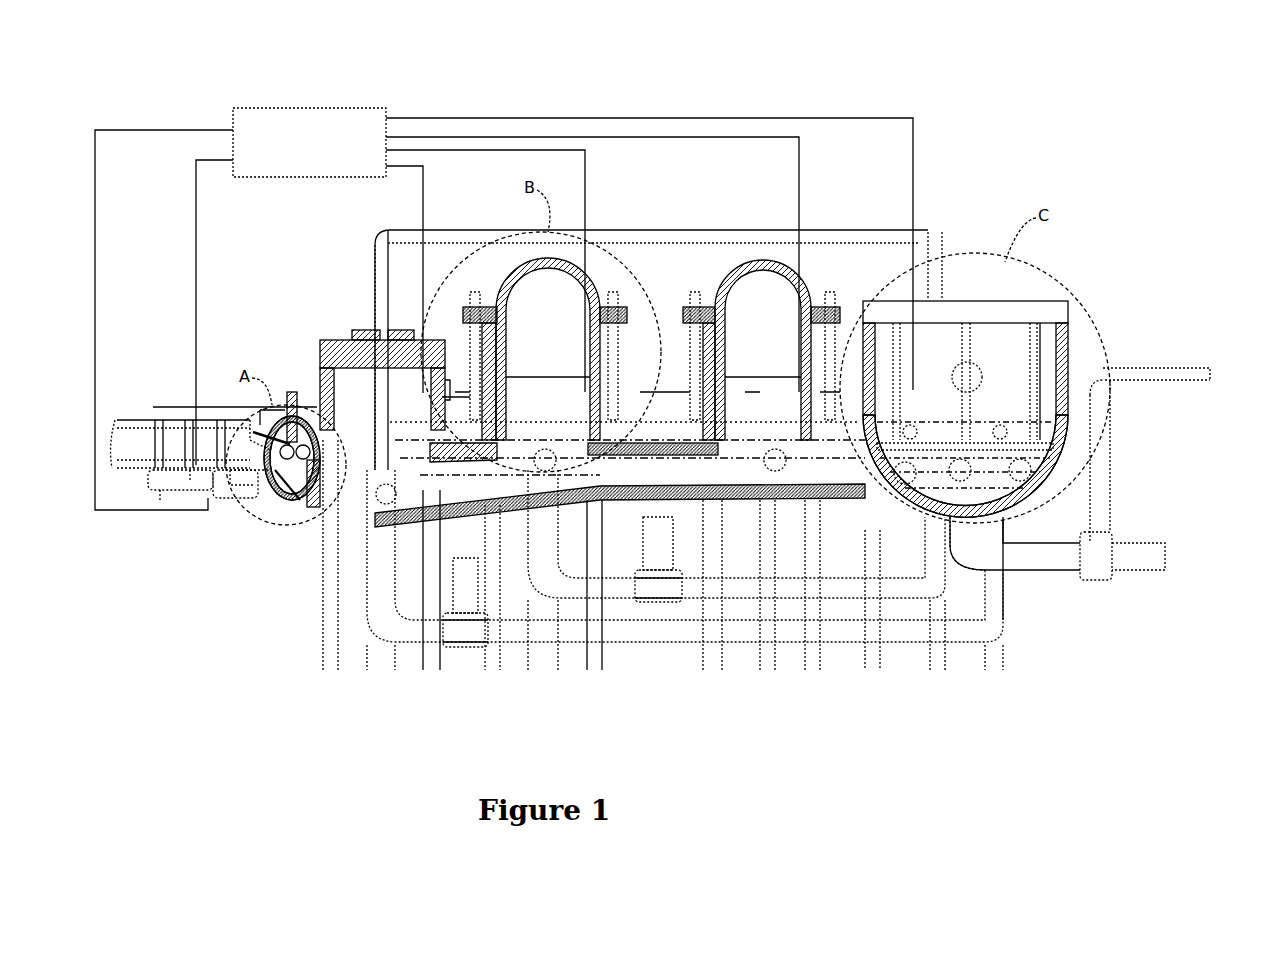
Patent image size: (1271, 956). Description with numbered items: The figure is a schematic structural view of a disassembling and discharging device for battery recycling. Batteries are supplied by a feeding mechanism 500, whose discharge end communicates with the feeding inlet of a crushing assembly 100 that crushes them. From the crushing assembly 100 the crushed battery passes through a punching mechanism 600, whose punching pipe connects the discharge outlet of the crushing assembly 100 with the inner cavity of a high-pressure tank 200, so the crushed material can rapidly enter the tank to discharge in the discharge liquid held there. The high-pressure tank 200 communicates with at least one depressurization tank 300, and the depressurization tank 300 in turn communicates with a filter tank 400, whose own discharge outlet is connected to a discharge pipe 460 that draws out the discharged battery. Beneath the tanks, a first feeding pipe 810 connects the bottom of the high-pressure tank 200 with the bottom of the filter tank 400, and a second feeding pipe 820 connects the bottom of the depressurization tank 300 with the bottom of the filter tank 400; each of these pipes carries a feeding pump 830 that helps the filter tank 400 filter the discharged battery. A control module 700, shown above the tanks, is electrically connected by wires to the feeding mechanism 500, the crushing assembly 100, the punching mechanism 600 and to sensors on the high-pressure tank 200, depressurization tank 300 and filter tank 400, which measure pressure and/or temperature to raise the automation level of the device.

The crushing assembly 100 is at (285, 482).
The high-pressure tank 200 is at (335, 492).
The depressurization tank 300 is at (546, 275).
The filter tank 400 is at (1005, 320).
The discharge pipe 460 is at (1045, 560).
The feeding mechanism 500 is at (138, 418).
The punching mechanism 600 is at (208, 493).
The control module 700 is at (345, 104).
The first feeding pipe 810 is at (575, 632).
The second feeding pipe 820 is at (755, 600).
The feeding pump 830 is at (470, 635).